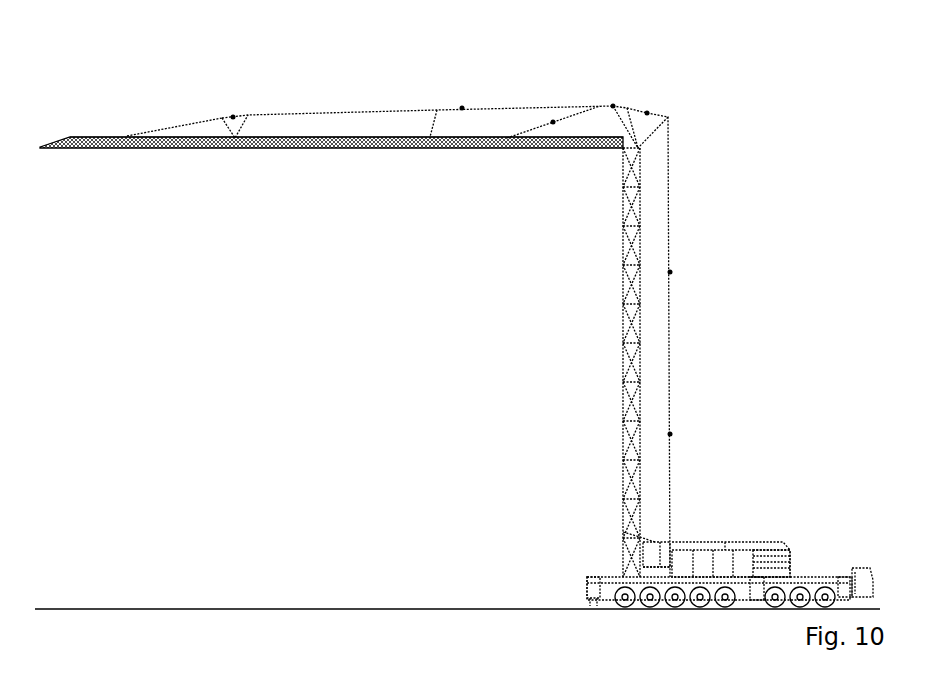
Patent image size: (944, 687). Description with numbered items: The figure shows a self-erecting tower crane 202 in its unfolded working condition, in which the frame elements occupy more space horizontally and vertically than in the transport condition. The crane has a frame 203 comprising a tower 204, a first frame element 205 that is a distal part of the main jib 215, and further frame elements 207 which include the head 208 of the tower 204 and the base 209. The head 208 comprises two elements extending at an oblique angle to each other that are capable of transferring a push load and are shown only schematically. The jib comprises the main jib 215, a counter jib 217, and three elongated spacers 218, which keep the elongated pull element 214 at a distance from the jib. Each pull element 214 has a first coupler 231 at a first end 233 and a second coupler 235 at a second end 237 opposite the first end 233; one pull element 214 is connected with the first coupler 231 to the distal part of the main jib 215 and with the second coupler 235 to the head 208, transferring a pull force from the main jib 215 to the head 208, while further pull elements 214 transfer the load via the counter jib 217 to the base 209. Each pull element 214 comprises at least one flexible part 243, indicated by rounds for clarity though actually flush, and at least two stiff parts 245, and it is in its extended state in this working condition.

The self-erecting tower crane 202 is at (202, 505).
The frame 203 is at (237, 412).
The tower 204 is at (510, 308).
The first frame element 205 is at (132, 198).
The further frame elements 207 is at (295, 430).
The head 208 is at (635, 108).
The base 209 is at (683, 528).
The elongated pull element 214 is at (392, 85).
The main jib 215 is at (343, 218).
The counter jib 217 is at (657, 133).
The elongated spacers 218 is at (425, 128).
The first coupler 231 is at (146, 75).
The first end 233 is at (125, 133).
The second coupler 235 is at (667, 81).
The second end 237 is at (632, 106).
The flexible part 243 is at (228, 102).
The stiff parts 245 is at (507, 98).